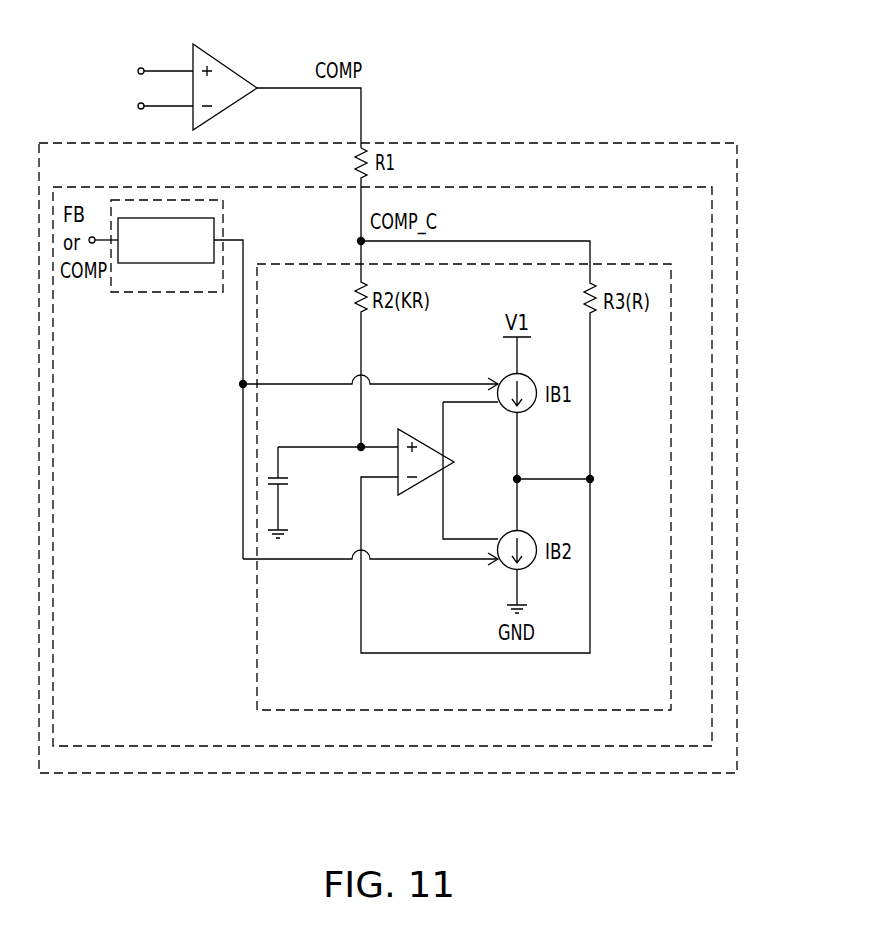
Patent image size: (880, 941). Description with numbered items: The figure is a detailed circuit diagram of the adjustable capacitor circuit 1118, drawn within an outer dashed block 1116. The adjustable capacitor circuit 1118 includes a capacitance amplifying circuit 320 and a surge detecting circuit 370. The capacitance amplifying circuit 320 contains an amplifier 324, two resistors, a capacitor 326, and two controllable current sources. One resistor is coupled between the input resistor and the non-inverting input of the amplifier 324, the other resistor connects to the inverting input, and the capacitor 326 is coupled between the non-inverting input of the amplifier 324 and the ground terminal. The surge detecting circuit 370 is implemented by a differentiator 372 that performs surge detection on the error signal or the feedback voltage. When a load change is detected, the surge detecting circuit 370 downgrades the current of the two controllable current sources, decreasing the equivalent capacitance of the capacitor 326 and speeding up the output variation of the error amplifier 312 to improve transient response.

The error amplifier 312 is at (226, 66).
The compensation control circuit 1116 is at (601, 143).
The adjustable capacitor circuit 1118 is at (640, 187).
The capacitance amplifying circuit 320 is at (616, 264).
The surge detecting circuit 370 is at (167, 277).
The differentiator 372 is at (166, 255).
The amplifier 324 is at (420, 483).
The capacitor 326 is at (331, 514).